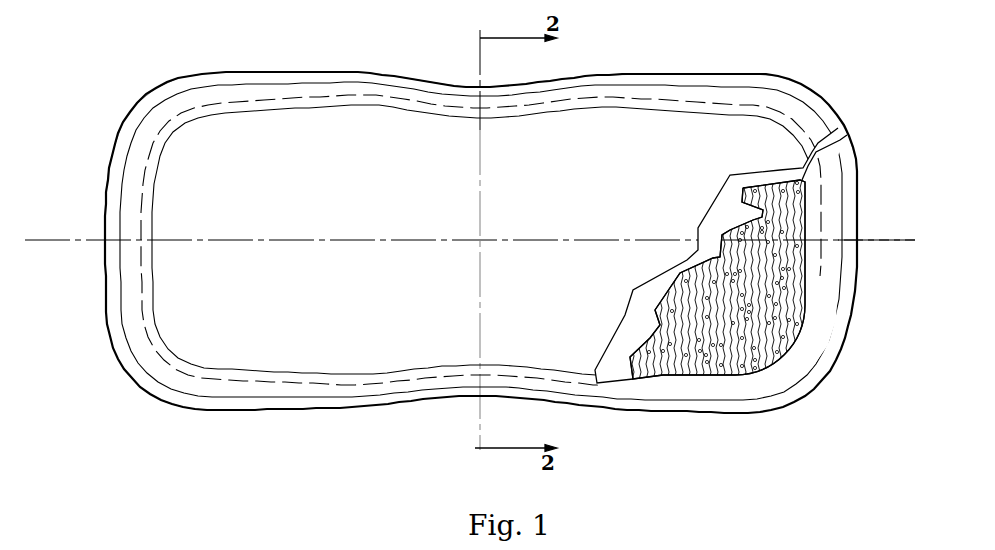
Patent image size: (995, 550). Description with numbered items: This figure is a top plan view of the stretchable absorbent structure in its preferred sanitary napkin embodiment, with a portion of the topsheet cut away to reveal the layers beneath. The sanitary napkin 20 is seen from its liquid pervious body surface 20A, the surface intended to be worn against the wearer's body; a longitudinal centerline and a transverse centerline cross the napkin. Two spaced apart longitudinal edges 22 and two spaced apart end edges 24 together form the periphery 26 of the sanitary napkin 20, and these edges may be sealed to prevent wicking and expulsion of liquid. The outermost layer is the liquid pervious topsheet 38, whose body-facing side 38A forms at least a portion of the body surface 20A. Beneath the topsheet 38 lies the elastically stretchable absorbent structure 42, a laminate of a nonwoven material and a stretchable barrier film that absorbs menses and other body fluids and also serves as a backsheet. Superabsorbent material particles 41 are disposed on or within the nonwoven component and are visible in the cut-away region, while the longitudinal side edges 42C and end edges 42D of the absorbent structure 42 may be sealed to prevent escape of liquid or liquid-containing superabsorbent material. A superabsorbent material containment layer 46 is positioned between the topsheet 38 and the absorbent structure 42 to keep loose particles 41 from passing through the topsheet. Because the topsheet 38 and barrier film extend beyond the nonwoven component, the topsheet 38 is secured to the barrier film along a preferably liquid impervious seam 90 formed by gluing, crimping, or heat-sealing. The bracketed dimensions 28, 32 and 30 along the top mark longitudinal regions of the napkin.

The sanitary napkin 20 is at (700, 66).
The body surface 20A is at (735, 154).
The longitudinal edges 22 is at (493, 86).
The end edges 24 is at (103, 255).
The periphery 26 is at (815, 398).
The front region 28 is at (106, 172).
The rear region 30 is at (859, 180).
The crotch region 32 is at (591, 65).
The topsheet 38 is at (687, 210).
The body-facing side 38A is at (330, 348).
The superabsorbent material particles 41 is at (775, 248).
The absorbent structure 42 is at (782, 322).
The longitudinal side edges 42C is at (737, 373).
The end edges 42D is at (803, 298).
The superabsorbent material containment layer 46 is at (630, 333).
The seam 90 is at (192, 400).